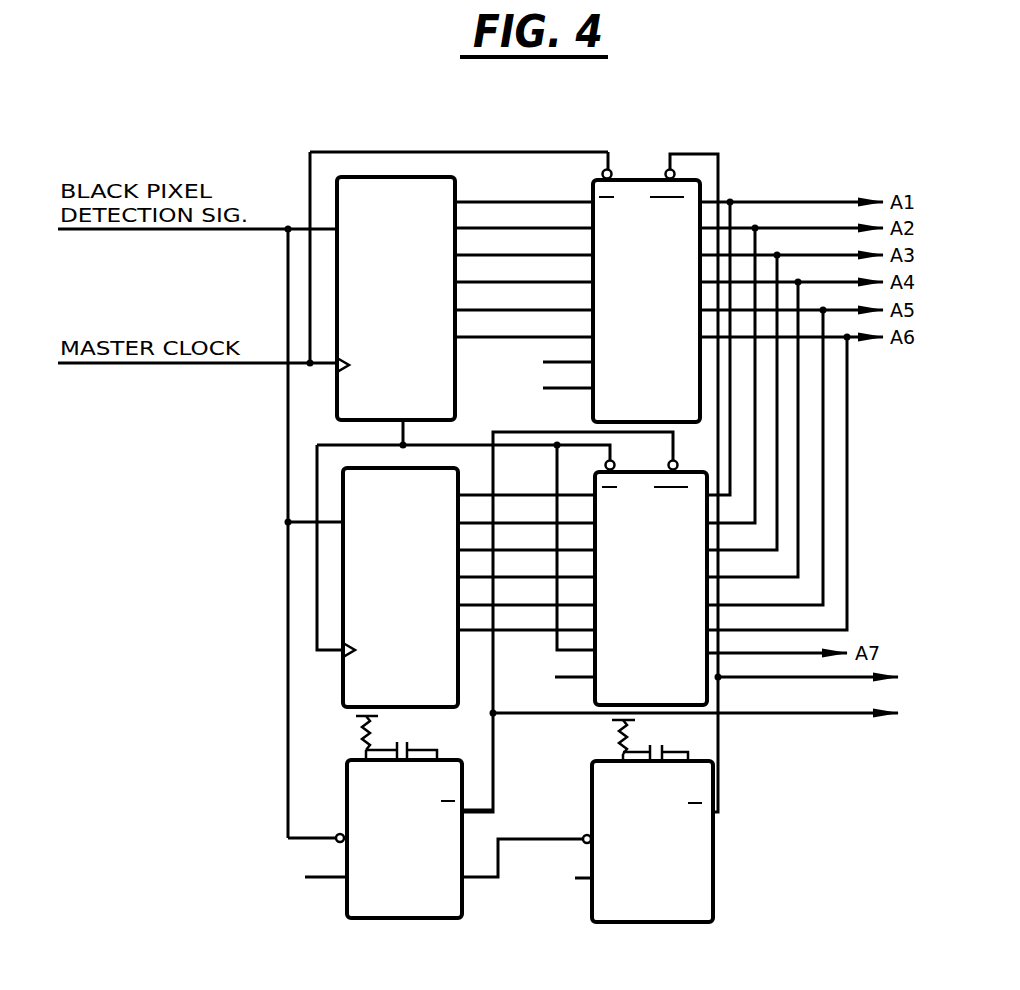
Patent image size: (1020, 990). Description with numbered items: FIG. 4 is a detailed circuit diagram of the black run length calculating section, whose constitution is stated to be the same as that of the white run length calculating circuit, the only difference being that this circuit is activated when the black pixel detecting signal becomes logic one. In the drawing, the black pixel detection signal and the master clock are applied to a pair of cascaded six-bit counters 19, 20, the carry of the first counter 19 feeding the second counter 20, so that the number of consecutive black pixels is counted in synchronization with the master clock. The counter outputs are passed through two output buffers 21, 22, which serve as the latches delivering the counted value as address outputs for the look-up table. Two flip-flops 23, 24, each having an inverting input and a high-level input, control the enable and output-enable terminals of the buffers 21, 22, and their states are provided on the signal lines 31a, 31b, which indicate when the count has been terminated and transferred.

The first counter 19 is at (455, 186).
The second counter 20 is at (343, 679).
The first buffer 21 is at (630, 179).
The second buffer 22 is at (595, 690).
The first flip-flop 23 is at (412, 918).
The second flip-flop 24 is at (713, 882).
The output signal line 31a is at (828, 677).
The output signal line 31b is at (717, 713).